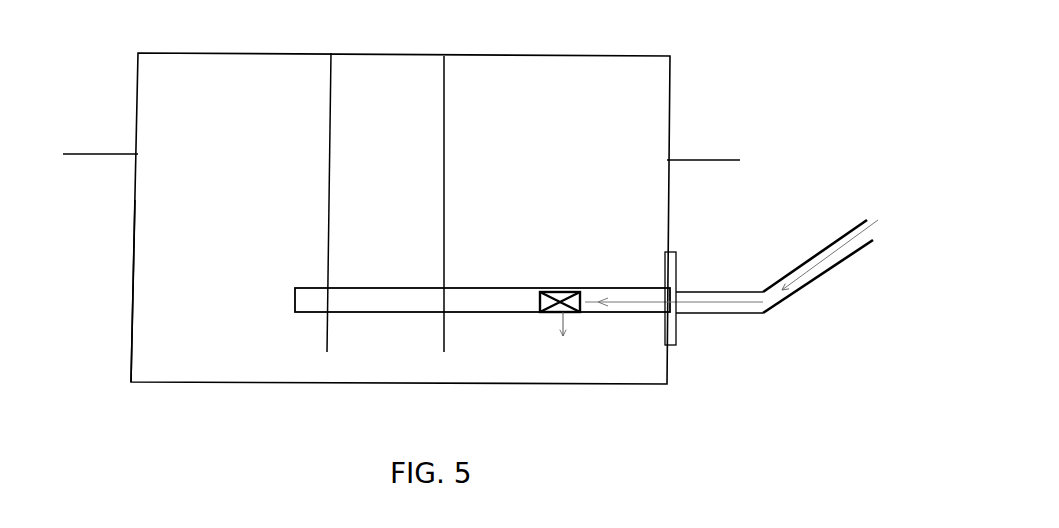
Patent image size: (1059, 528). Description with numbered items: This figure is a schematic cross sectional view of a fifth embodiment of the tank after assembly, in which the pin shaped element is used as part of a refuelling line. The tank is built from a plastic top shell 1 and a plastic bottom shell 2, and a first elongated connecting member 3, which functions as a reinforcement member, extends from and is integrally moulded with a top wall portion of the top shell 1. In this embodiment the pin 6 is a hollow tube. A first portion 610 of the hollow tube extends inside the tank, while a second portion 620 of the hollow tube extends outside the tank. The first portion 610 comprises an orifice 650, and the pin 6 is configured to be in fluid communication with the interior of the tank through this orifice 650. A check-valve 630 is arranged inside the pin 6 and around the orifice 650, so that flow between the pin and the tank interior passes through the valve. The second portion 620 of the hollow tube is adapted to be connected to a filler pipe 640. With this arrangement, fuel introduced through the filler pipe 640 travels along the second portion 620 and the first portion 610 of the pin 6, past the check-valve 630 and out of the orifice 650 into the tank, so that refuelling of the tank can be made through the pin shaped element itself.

The top shell 1 is at (135, 112).
The bottom shell 2 is at (133, 268).
The first elongated connecting member 3 is at (433, 157).
The pin 6 is at (670, 294).
The first portion of the hollow tube 610 is at (522, 272).
The second portion of the hollow tube 620 is at (712, 320).
The check-valve 630 is at (557, 292).
The filler pipe 640 is at (836, 240).
The orifice 650 is at (552, 316).